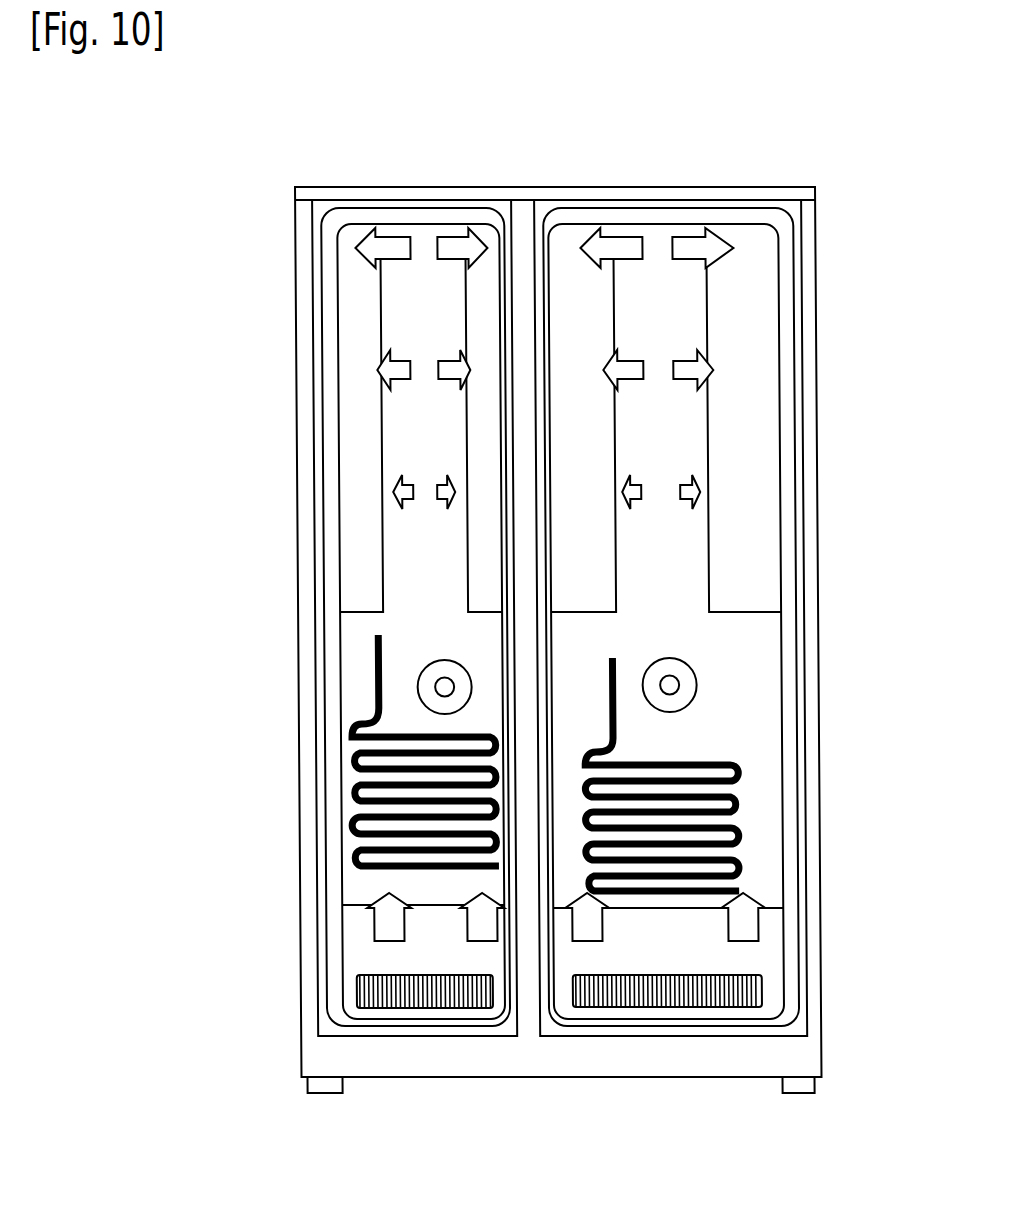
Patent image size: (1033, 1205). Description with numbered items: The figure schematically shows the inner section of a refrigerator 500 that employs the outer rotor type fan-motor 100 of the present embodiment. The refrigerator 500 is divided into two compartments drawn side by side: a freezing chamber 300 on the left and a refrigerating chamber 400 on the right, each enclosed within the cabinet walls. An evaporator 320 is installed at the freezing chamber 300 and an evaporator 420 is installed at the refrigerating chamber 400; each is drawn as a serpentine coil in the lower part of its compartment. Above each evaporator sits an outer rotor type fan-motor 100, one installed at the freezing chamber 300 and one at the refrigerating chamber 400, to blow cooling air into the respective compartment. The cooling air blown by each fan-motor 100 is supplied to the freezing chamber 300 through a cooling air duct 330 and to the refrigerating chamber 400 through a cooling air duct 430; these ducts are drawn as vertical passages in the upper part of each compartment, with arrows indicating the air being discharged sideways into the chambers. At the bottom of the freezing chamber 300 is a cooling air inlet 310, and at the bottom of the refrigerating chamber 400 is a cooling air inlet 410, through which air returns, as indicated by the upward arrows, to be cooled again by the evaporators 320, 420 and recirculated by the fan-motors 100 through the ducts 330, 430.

The refrigerator 500 is at (277, 181).
The freezing chamber 300 is at (359, 569).
The refrigerating chamber 400 is at (723, 569).
The cooling air duct 330 is at (416, 421).
The cooling air duct 430 is at (655, 315).
The evaporator 320 is at (349, 823).
The evaporator 420 is at (734, 769).
The cooling air inlet 310 is at (370, 991).
The cooling air inlet 410 is at (739, 990).
The outer rotor type fan-motor 100 is at (426, 683).